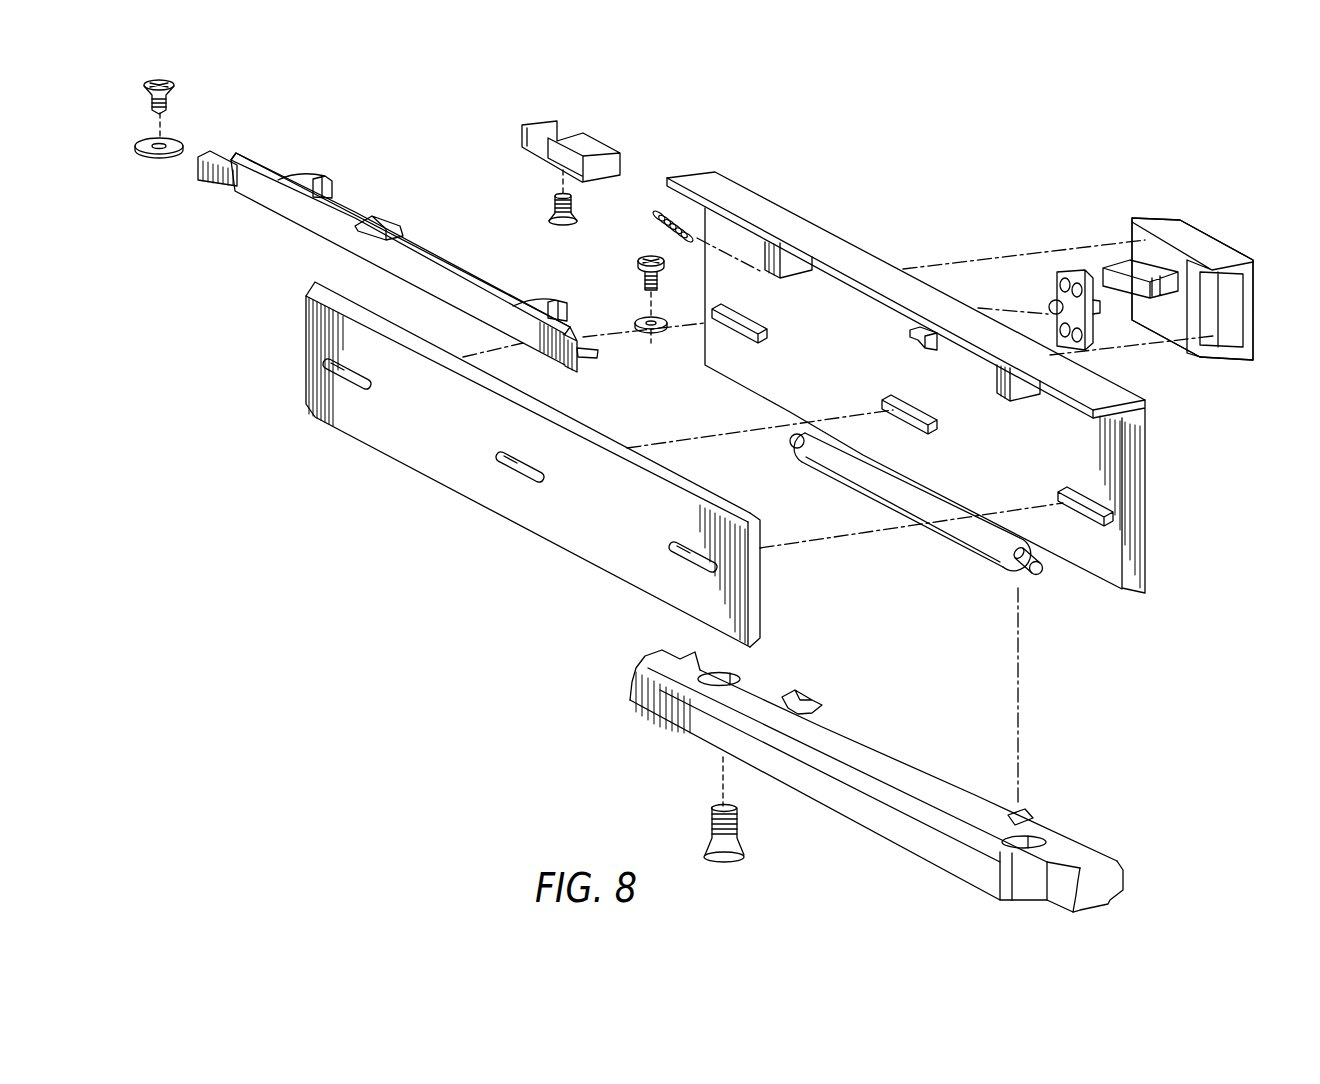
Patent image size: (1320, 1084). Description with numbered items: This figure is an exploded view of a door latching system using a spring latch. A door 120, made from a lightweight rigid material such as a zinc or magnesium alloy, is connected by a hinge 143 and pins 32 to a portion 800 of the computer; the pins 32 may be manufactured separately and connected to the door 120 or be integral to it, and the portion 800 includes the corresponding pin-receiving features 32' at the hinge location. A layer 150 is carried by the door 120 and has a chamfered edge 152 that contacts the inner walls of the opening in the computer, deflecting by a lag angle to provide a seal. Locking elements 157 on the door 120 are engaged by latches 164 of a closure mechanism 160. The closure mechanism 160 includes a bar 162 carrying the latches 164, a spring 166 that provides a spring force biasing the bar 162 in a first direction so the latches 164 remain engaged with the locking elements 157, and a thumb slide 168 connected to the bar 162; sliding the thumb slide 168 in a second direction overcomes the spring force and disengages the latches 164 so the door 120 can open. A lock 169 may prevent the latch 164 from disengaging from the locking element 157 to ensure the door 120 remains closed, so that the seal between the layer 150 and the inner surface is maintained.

The pins 32 is at (918, 530).
The pin receiving notch 32' is at (907, 757).
The door 120 is at (865, 262).
The hinge 143 is at (967, 552).
The layer 150 is at (398, 447).
The chamfered edge 152 is at (760, 582).
The locking elements 157 is at (790, 268).
The closure mechanism 160 is at (431, 151).
The bar 162 is at (318, 221).
The latches 164 is at (318, 178).
The spring 166 is at (657, 222).
The thumb slide 168 is at (1207, 252).
The lock 169 is at (1057, 290).
The portion 800 is at (927, 843).